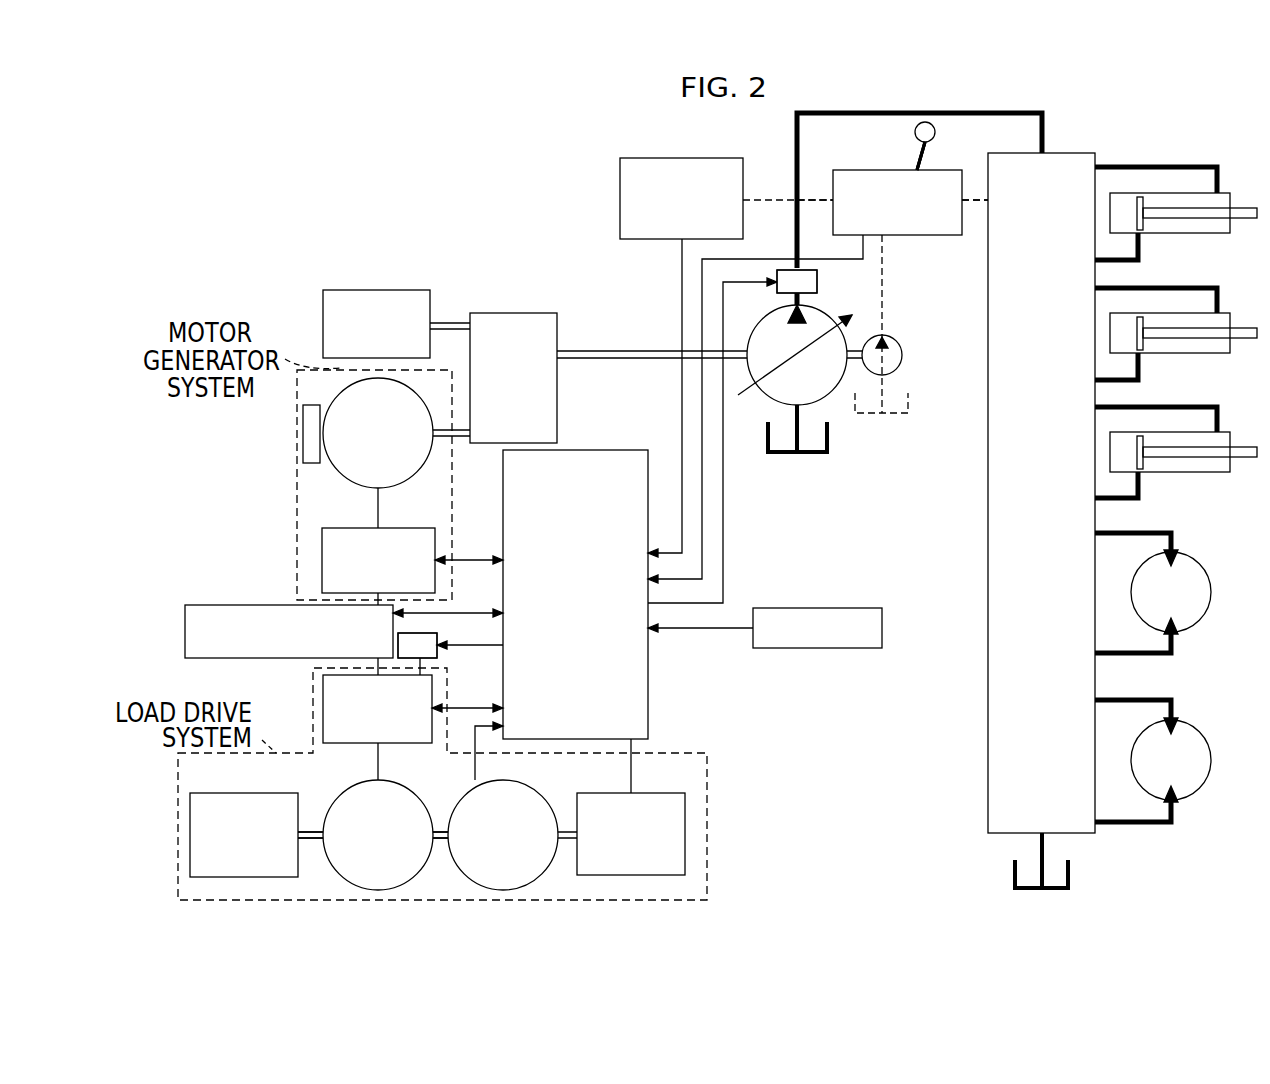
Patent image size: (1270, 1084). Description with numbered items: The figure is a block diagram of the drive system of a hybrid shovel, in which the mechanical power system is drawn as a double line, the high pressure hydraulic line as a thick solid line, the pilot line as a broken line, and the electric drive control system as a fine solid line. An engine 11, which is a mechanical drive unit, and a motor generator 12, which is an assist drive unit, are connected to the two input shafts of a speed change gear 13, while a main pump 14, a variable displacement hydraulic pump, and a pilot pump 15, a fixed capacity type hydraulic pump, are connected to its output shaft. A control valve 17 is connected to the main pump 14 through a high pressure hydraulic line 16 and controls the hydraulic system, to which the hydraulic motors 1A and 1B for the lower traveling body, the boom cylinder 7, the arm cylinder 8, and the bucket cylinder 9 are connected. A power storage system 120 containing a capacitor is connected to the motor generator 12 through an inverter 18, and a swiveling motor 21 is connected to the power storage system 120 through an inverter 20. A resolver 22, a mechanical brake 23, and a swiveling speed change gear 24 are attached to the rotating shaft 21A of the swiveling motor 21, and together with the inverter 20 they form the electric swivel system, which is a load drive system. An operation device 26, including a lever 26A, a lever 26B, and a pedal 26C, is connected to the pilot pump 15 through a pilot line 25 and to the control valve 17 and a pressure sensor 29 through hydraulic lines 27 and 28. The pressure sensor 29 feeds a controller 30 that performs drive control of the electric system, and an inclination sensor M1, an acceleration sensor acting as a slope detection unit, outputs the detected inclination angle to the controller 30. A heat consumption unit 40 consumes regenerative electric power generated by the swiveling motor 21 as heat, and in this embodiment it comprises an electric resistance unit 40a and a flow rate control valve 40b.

The hydraulic motor 1A is at (1196, 563).
The hydraulic motor 1B is at (1196, 731).
The boom cylinder 7 is at (1232, 433).
The arm cylinder 8 is at (1232, 314).
The bucket cylinder 9 is at (1232, 194).
The engine 11 is at (323, 318).
The motor generator 12 is at (349, 487).
The speed change gear 13 is at (519, 313).
The main pump 14 is at (832, 395).
The pilot pump 15 is at (895, 340).
The high pressure hydraulic line 16 is at (797, 133).
The control valve 17 is at (1065, 158).
The inverter 18 is at (393, 528).
The inverter 20 is at (323, 691).
The swiveling motor 21 is at (415, 792).
The rotating shaft 21A is at (318, 850).
The resolver 22 is at (540, 787).
The mechanical brake 23 is at (655, 795).
The swiveling speed change gear 24 is at (281, 793).
The pilot line 25 is at (882, 278).
The operation device 26 is at (932, 169).
The lever 26A is at (911, 132).
The lever 26B is at (921, 156).
The pedal 26C is at (921, 156).
The hydraulic line 27 is at (976, 203).
The hydraulic line 28 is at (817, 205).
The pressure sensor 29 is at (658, 240).
The controller 30 is at (615, 449).
The heat consumption unit 40 is at (607, 464).
The electric resistance unit 40a is at (437, 651).
The flow rate control valve 40b is at (817, 284).
The power storage system 120 is at (232, 659).
The inclination sensor M1 is at (820, 608).